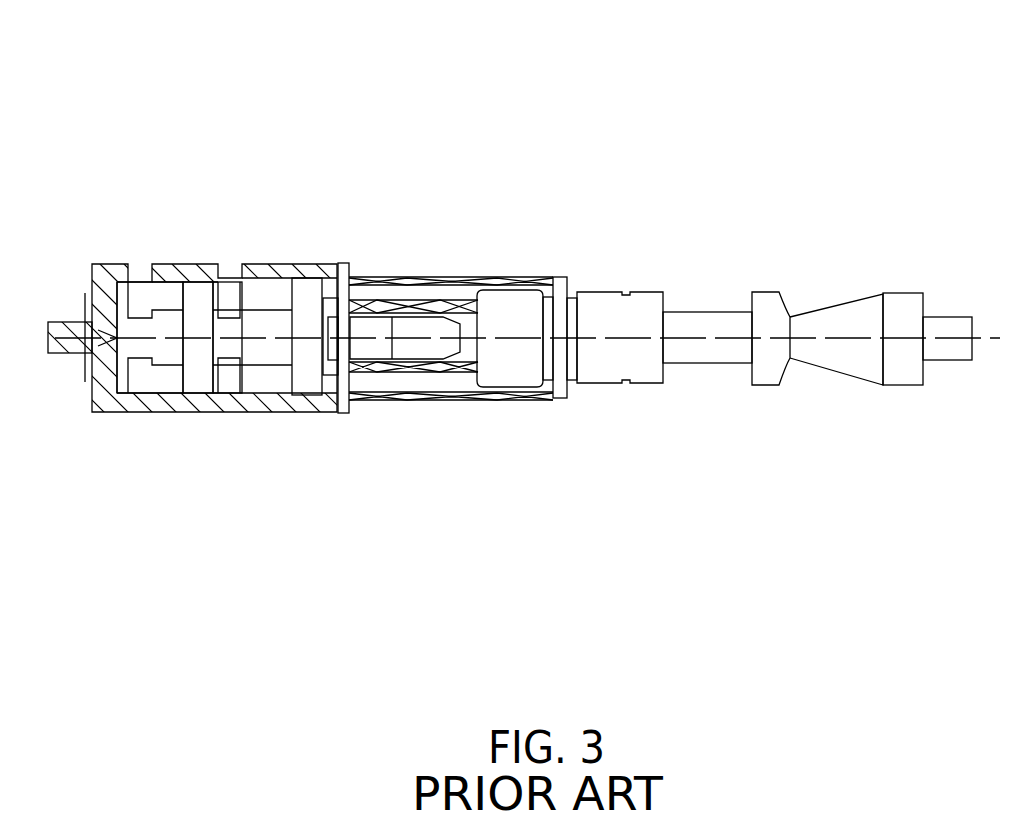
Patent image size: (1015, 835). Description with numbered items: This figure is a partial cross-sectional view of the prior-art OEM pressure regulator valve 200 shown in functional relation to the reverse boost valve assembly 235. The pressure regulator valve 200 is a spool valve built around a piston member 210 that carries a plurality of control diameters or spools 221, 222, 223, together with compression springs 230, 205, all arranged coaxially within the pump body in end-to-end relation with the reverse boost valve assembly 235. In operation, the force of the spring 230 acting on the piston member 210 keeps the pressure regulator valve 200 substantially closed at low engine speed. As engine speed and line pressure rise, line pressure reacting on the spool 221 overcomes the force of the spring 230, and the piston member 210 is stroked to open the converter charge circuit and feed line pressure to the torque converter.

The OEM pressure regulator valve 200 is at (480, 128).
The reverse boost valve assembly 235 is at (275, 226).
The compression spring 205 is at (381, 398).
The compression spring 230 is at (463, 400).
The piston member 210 is at (700, 386).
The spool 223 is at (611, 292).
The spool 222 is at (768, 292).
The spool 221 is at (905, 293).